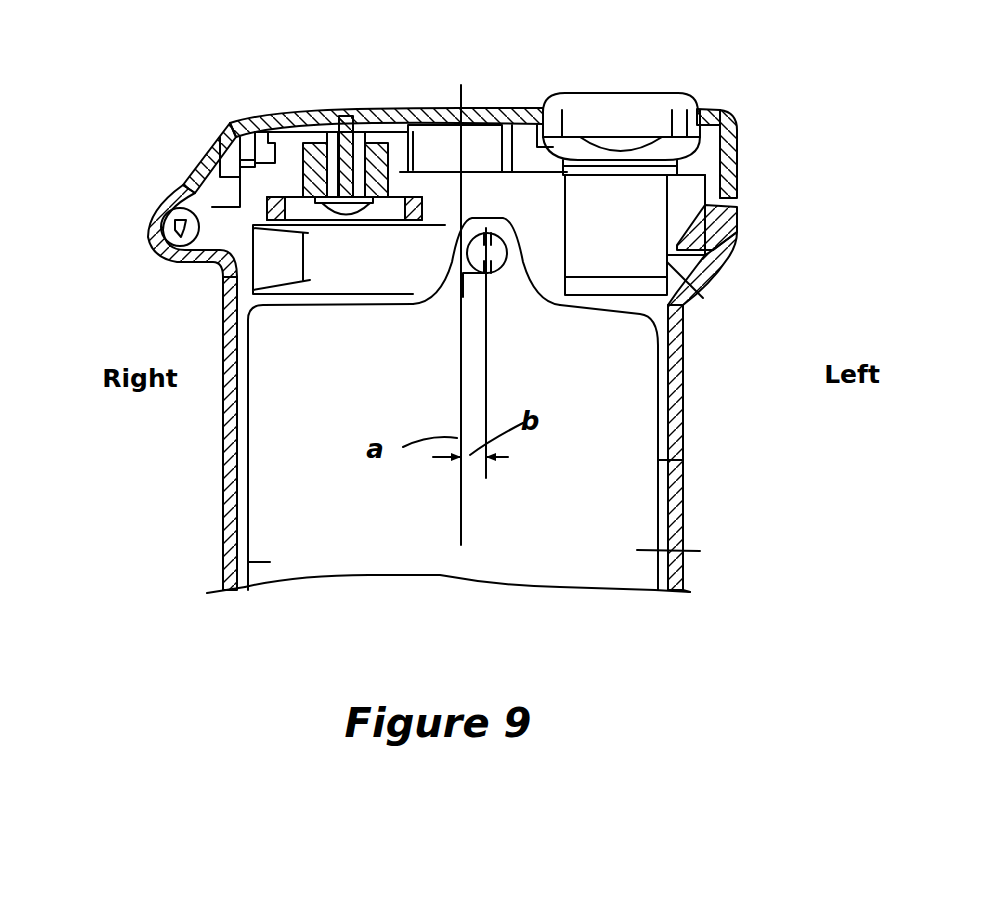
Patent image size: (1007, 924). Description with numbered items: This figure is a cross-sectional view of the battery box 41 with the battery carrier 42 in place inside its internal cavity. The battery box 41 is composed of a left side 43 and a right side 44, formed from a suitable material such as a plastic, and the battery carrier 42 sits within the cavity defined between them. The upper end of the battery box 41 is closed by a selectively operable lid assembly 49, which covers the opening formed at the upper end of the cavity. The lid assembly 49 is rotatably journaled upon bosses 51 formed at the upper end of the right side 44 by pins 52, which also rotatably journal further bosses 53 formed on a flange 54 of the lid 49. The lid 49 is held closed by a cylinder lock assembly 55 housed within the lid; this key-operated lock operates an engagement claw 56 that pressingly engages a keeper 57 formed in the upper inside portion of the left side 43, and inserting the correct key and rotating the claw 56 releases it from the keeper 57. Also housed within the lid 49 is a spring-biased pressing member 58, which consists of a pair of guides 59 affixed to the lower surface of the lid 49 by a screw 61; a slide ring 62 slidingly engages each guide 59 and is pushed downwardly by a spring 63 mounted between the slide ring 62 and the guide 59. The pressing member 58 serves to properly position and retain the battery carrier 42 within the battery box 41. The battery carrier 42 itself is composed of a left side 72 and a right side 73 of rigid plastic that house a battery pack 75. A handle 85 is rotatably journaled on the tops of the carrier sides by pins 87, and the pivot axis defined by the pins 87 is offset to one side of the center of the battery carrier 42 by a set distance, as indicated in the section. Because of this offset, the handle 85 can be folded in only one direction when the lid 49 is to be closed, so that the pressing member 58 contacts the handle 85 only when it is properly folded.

The battery box 41 is at (720, 412).
The battery carrier 42 is at (666, 525).
The left side 43 is at (682, 463).
The right side 44 is at (240, 508).
The selectively operable lid assembly 49 is at (495, 90).
The bosses 51 is at (163, 228).
The pins 52 is at (178, 247).
The further bosses 53 is at (197, 175).
The flange 54 is at (740, 183).
The cylinder lock assembly 55 is at (688, 97).
The engagement claw 56 is at (703, 294).
The keeper 57 is at (696, 243).
The spring-biased pressing member 58 is at (437, 147).
The guides 59 is at (328, 172).
The screw 61 is at (347, 225).
The slide ring 62 is at (394, 223).
The spring 63 is at (410, 187).
The left side 72 is at (700, 551).
The right side 73 is at (270, 562).
The battery pack 75 is at (627, 565).
The handle 85 is at (360, 306).
The pins 87 is at (510, 285).